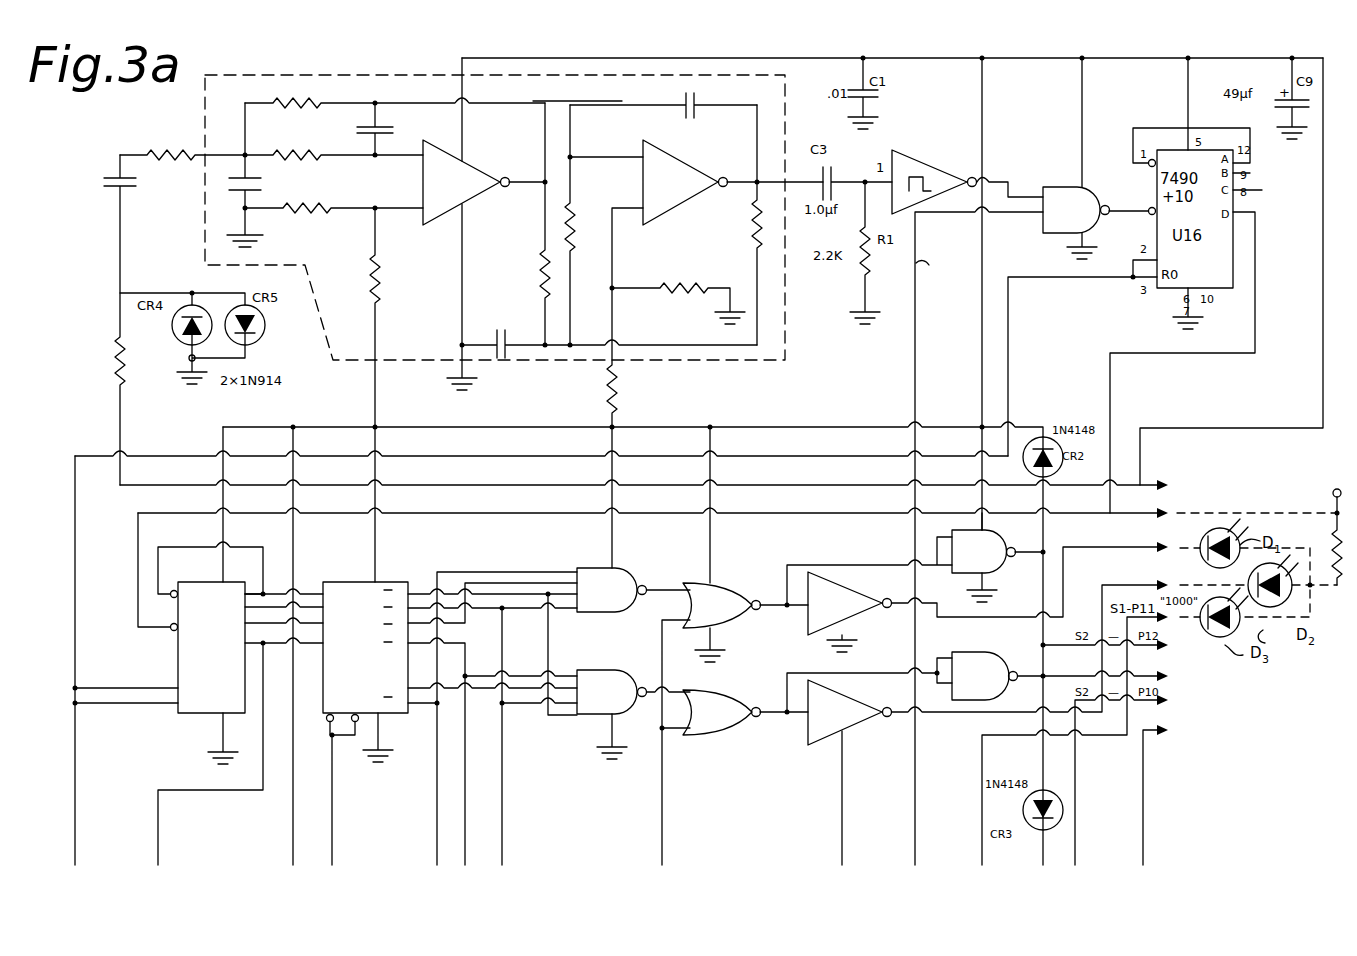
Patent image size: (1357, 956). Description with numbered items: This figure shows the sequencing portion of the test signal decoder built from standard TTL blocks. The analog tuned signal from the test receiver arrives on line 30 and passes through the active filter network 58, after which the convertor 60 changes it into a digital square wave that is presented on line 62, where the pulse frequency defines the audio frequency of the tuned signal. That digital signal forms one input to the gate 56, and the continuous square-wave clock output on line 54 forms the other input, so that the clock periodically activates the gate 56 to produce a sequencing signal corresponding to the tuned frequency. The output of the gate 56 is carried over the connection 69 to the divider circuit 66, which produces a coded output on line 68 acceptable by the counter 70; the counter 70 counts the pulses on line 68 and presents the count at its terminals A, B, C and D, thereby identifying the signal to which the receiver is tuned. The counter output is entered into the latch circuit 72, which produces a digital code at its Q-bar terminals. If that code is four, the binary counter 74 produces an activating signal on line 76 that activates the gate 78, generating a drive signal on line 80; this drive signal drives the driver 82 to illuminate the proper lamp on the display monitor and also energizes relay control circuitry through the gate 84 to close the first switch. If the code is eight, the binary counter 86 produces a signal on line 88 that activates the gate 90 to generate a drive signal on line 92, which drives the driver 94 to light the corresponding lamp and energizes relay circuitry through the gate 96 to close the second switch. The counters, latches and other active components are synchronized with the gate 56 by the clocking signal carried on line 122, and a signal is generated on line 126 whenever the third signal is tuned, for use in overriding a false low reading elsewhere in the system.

The active filter network 58 is at (442, 75).
The clocking signal line 122 is at (1026, 58).
The convertor 60 is at (884, 155).
The line 62 is at (1002, 182).
The clock output line 54 is at (916, 346).
The gate 56 is at (1047, 233).
The NAND gate output line 69 is at (1133, 215).
The divider circuit 66 is at (1262, 190).
The line 68 is at (1255, 270).
The line 30 is at (120, 398).
The counter 70 is at (178, 651).
The latch circuit 72 is at (358, 582).
The binary counter 74 is at (592, 568).
The line 76 is at (676, 592).
The gate 78 is at (700, 583).
The drive signal line 80 is at (808, 565).
The driver 82 is at (886, 614).
The gate 84 is at (957, 575).
The binary counter 86 is at (588, 716).
The line 88 is at (666, 695).
The gate 90 is at (726, 692).
The drive signal line 92 is at (775, 717).
The driver 94 is at (828, 744).
The gate 96 is at (968, 652).
The line 126 is at (1143, 738).